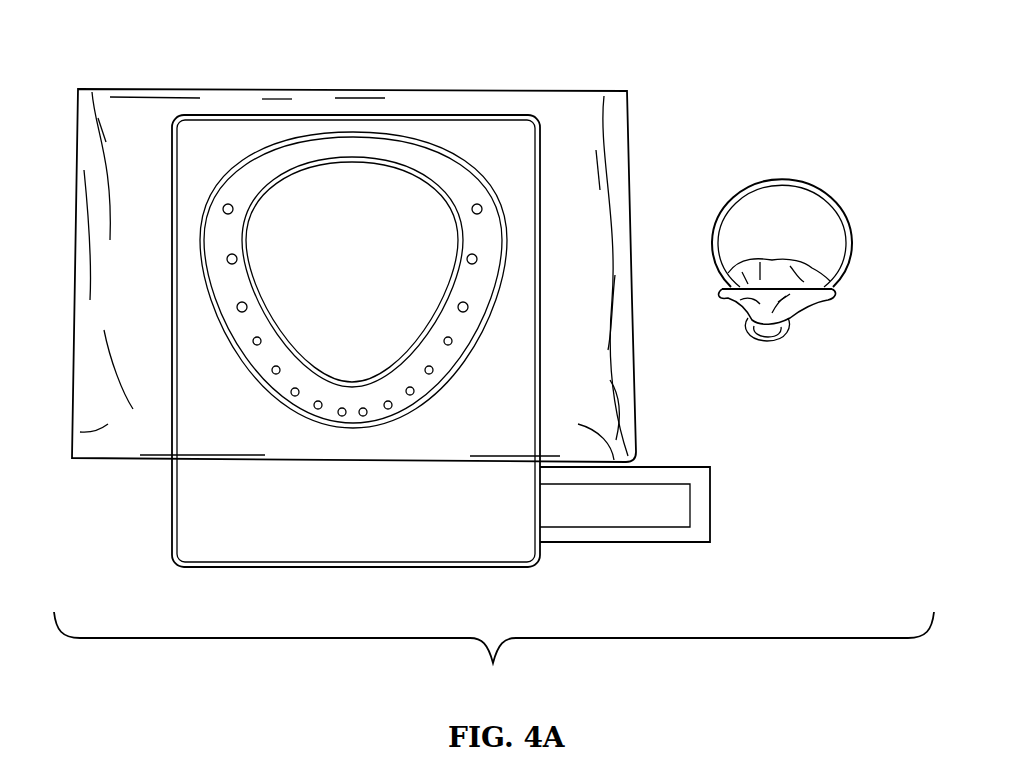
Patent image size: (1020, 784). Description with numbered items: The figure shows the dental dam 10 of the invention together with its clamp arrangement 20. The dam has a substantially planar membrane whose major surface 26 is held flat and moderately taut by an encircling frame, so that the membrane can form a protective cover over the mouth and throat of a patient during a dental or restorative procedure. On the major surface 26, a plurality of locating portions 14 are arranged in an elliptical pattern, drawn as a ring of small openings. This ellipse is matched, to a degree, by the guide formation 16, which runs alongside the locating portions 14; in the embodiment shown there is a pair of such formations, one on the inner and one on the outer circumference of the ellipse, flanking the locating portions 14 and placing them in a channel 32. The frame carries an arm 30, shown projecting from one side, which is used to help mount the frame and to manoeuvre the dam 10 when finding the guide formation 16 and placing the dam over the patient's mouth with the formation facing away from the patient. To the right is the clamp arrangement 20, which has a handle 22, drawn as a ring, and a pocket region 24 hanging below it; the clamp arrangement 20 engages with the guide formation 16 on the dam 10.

The dental dam 10 is at (156, 80).
The locating portions 14 is at (212, 213).
The guide formation 16 is at (460, 156).
The clamp arrangement 20 is at (821, 264).
The handle 22 is at (790, 178).
The pocket region 24 is at (773, 342).
The major surface 26 is at (133, 409).
The arm 30 is at (648, 543).
The channel 32 is at (367, 148).